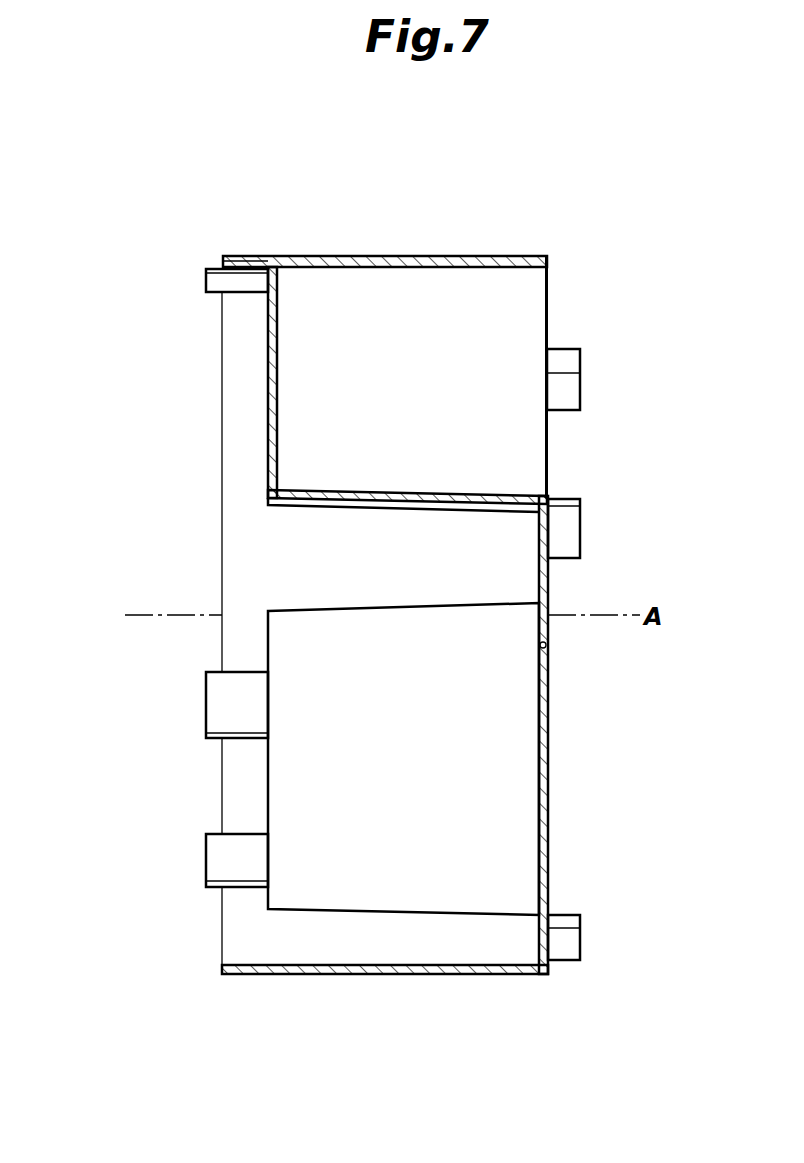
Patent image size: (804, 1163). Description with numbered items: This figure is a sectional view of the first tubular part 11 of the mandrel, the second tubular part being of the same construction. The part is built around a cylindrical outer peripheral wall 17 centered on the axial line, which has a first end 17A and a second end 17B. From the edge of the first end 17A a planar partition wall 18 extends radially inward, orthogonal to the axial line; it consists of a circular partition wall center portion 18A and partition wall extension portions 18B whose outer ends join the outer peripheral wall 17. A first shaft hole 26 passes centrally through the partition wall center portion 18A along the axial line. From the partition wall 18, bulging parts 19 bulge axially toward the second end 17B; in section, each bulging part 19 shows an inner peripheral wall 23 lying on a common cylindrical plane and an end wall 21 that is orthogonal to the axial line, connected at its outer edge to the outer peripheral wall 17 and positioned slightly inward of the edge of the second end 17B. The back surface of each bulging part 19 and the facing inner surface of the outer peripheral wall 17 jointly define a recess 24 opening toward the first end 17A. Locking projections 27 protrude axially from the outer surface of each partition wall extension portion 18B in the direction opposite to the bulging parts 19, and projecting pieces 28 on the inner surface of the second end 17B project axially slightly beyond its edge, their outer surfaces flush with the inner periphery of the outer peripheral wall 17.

The first tubular part 11 is at (410, 220).
The outer peripheral wall 17 is at (338, 256).
The first end 17A is at (537, 256).
The second end 17B is at (239, 256).
The partition wall 18 is at (552, 786).
The partition wall center portion 18A is at (548, 700).
The partition wall extension portion 18B is at (548, 882).
The bulging part 19 is at (262, 472).
The end wall 21 is at (268, 346).
The inner peripheral wall 23 is at (421, 490).
The recess 24 is at (505, 265).
The first shaft hole 26 is at (548, 640).
The locking projection 27 is at (566, 945).
The projecting piece 28 is at (215, 713).